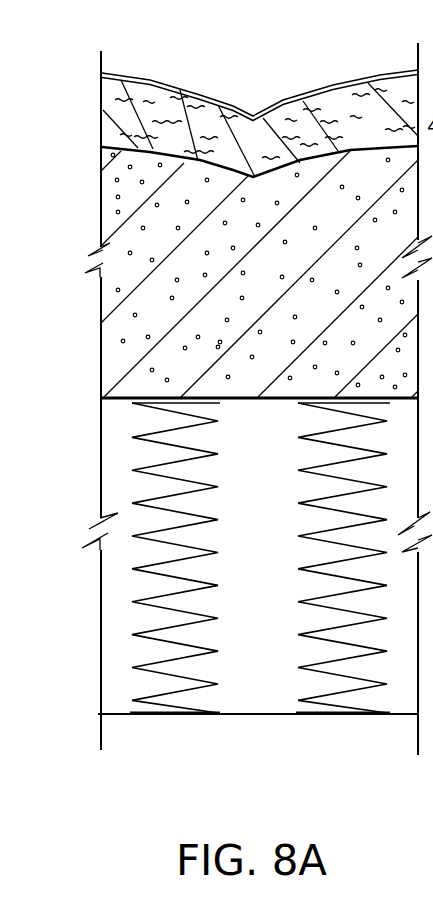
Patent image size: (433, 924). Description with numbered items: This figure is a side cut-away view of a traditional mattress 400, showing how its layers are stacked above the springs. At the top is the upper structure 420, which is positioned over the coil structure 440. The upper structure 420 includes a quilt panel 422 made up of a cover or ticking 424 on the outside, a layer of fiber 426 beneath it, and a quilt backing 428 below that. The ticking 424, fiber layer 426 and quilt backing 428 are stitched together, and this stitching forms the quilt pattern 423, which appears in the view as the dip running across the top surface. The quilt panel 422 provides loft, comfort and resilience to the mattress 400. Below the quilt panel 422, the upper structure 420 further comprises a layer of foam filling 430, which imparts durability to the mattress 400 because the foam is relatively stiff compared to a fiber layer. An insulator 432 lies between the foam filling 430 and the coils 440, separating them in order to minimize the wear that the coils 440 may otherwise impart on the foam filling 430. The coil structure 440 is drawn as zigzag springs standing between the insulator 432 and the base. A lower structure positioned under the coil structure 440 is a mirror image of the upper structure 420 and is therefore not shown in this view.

The traditional mattress 400 is at (240, 76).
The upper structure 420 is at (224, 274).
The quilt panel 422 is at (224, 128).
The quilt pattern 423 is at (262, 108).
The ticking 424 is at (102, 78).
The fiber layer 426 is at (100, 130).
The quilt backing 428 is at (102, 150).
The foam filling 430 is at (100, 228).
The insulator 432 is at (100, 398).
The coil structure 440 is at (100, 488).